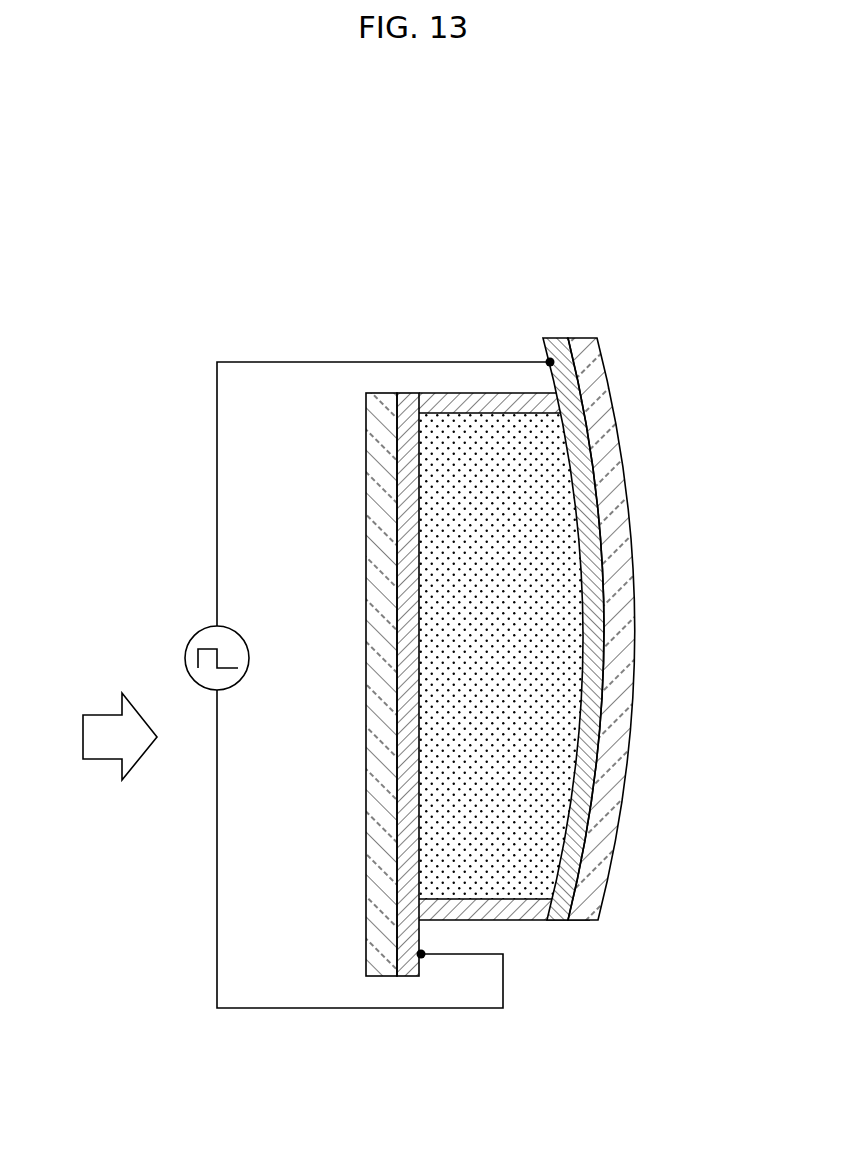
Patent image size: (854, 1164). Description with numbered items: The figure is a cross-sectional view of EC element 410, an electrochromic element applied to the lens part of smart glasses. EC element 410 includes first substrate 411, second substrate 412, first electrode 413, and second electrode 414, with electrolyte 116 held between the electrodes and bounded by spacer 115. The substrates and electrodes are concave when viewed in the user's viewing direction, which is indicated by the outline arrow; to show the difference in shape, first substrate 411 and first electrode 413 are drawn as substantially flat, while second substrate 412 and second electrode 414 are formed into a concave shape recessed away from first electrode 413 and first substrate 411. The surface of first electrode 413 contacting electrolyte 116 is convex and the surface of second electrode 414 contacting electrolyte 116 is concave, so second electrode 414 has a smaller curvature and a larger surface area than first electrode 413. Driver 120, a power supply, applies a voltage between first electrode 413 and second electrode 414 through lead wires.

The EC element 410 is at (482, 634).
The first substrate 411 is at (380, 461).
The second substrate 412 is at (603, 461).
The first electrode 413 is at (405, 510).
The second electrode 414 is at (588, 692).
The spacer 115 is at (514, 912).
The electrolyte 116 is at (535, 781).
The driver 120 is at (200, 636).